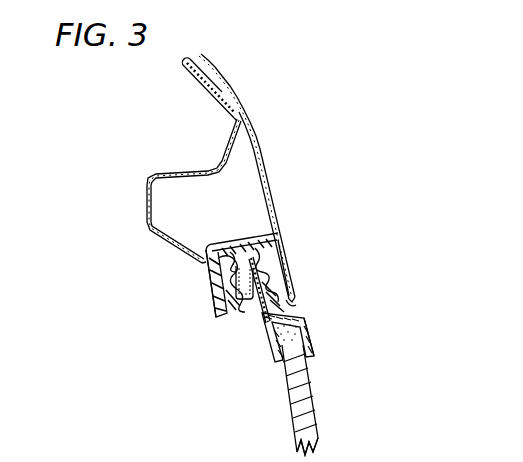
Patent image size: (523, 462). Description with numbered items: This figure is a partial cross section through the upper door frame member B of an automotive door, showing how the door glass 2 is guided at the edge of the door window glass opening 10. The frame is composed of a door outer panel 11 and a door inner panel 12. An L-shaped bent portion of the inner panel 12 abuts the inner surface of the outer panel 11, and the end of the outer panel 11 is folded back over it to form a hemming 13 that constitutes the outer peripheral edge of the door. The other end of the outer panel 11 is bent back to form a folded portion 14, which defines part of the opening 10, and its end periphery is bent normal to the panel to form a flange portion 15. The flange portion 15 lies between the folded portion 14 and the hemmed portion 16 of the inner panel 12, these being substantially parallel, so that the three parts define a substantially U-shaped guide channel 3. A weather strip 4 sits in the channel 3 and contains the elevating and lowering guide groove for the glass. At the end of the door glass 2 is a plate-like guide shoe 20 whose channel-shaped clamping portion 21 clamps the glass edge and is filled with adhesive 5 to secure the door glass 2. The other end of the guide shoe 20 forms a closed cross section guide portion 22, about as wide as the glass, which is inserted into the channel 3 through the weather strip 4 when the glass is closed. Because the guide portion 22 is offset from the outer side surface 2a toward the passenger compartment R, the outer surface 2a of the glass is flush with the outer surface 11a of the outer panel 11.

The door glass 2 is at (299, 389).
The outer side surface of the door glass 2a is at (308, 421).
The guide channel 3 is at (233, 318).
The weather strip 4 is at (280, 243).
The adhesive 5 is at (302, 319).
The door window glass opening 10 is at (298, 305).
The door outer panel 11 is at (268, 169).
The outer surface of the outer panel 11a is at (280, 199).
The door inner panel 12 is at (181, 173).
The hemming 13 is at (212, 62).
The folded portion 14 is at (293, 268).
The flange portion 15 is at (236, 236).
The hemmed portion 16 is at (208, 302).
The guide shoe 20 is at (263, 326).
The clamping portion 21 is at (310, 337).
The guide portion 22 is at (205, 265).
The upper door frame member B is at (200, 153).
The passenger compartment R is at (156, 307).